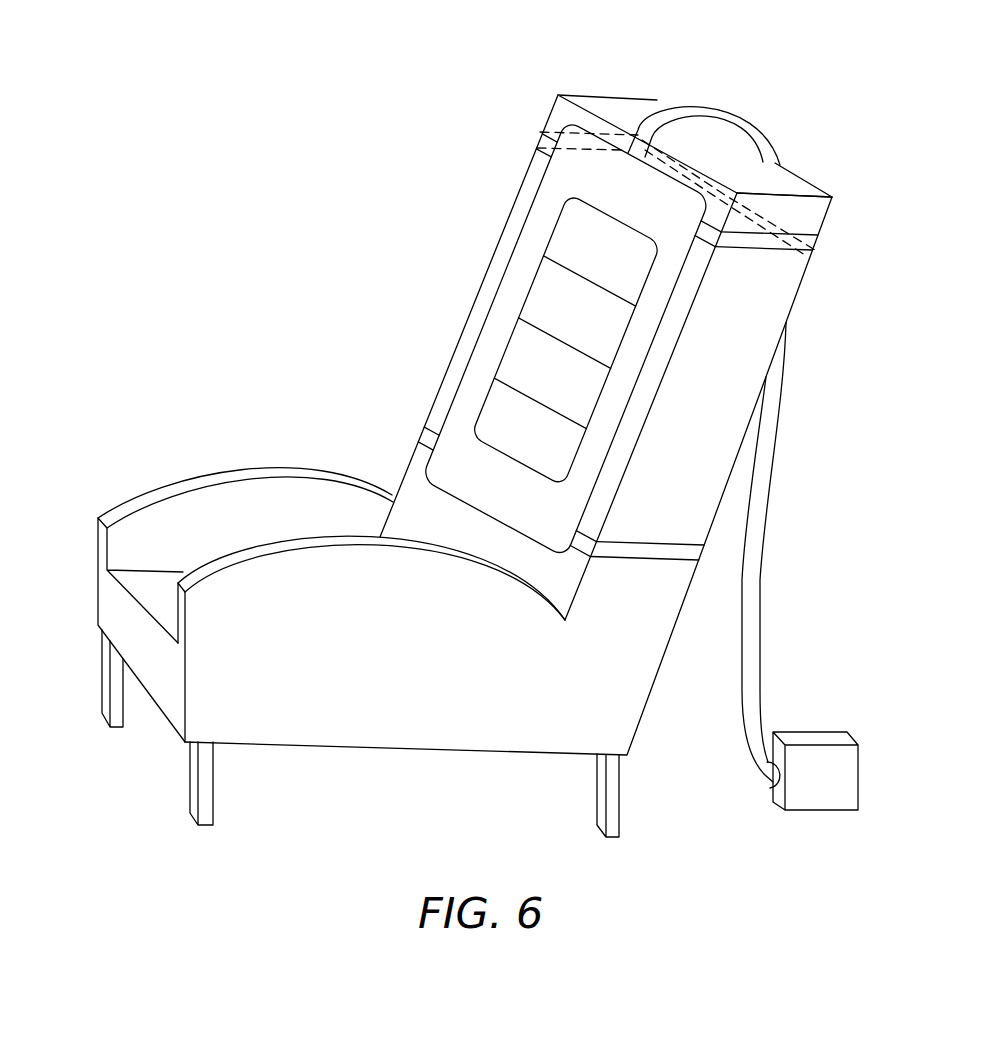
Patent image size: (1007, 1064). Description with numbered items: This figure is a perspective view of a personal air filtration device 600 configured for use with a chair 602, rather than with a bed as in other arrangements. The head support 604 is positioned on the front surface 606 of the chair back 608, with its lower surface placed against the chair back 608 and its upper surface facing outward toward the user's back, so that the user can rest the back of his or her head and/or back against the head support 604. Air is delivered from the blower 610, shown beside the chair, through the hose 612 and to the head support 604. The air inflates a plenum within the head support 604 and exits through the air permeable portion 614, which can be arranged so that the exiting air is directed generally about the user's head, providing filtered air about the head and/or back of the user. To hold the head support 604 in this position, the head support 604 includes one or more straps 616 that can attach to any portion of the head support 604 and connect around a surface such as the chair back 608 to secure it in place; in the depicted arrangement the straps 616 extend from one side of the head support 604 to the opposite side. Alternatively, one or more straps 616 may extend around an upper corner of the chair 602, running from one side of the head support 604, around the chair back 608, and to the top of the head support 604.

The personal air filtration device 600 is at (584, 67).
The chair 602 is at (113, 603).
The head support 604 is at (512, 289).
The front surface 606 is at (418, 490).
The chair back 608 is at (768, 332).
The blower 610 is at (850, 770).
The hose 612 is at (755, 550).
The air permeable portion 614 is at (562, 243).
The straps 616 is at (783, 240).